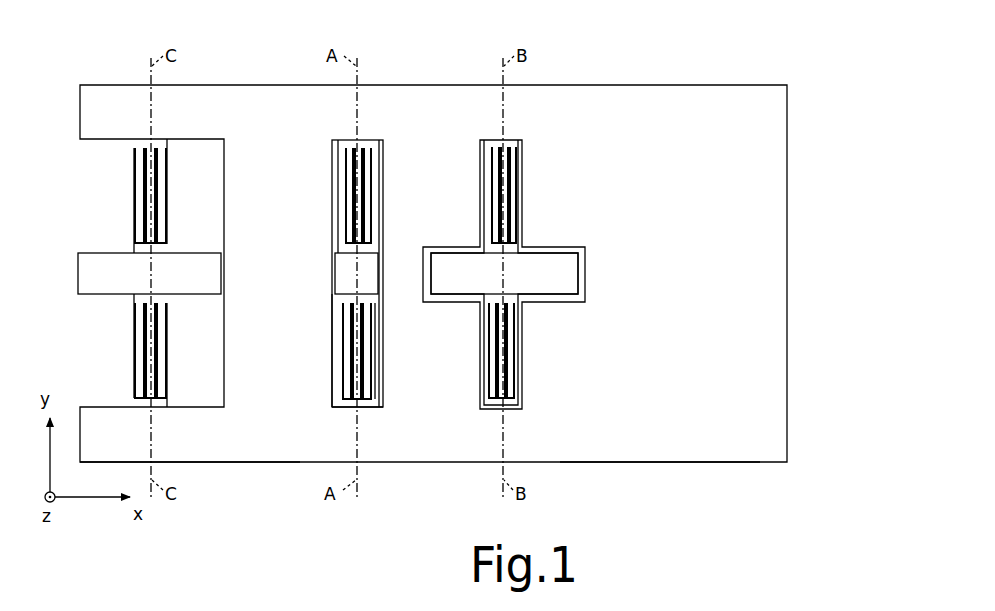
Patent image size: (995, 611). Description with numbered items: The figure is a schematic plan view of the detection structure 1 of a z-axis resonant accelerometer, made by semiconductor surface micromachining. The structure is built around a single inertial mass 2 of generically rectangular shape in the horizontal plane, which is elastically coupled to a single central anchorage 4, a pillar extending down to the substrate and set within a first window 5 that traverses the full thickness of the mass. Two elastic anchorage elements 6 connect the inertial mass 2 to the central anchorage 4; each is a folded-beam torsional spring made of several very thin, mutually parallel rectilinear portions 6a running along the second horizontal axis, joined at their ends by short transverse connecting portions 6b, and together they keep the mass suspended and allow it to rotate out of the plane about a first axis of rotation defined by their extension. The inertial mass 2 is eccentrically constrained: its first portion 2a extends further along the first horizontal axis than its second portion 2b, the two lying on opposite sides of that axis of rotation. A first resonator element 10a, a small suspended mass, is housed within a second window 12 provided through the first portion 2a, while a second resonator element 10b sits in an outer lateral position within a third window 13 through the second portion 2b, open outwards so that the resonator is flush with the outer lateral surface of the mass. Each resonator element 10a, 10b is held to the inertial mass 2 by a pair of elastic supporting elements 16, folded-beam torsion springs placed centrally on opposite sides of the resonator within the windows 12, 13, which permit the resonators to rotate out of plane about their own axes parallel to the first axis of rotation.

The detection structure 1 is at (784, 66).
The inertial mass 2 is at (720, 442).
The first portion 2a is at (653, 453).
The second portion 2b is at (243, 443).
The central anchorage 4 is at (338, 271).
The first window 5 is at (333, 372).
The elastic anchorage element 6 is at (360, 197).
The rectilinear portion 6a is at (369, 330).
The connecting portion 6b is at (350, 402).
The first resonator element 10a is at (541, 273).
The second resonator element 10b is at (83, 277).
The second window 12 is at (582, 296).
The third window 13 is at (199, 146).
The elastic supporting element 16 is at (132, 175).